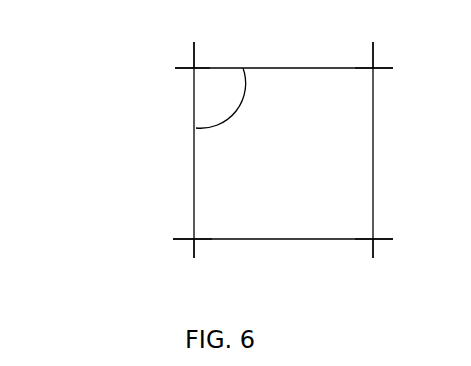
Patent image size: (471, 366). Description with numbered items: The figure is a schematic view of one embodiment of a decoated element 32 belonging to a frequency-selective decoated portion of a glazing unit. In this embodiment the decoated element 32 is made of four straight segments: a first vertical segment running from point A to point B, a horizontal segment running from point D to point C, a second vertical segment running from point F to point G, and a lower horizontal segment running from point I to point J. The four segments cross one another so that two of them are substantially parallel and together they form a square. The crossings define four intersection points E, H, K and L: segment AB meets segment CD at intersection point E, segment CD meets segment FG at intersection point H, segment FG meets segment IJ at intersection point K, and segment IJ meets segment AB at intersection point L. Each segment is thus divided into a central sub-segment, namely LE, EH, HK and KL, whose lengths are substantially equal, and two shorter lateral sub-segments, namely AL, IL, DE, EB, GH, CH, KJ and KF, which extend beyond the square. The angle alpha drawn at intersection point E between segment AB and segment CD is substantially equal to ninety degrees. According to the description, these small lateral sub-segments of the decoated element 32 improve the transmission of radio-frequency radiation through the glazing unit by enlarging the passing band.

The decoated element 32 is at (98, 42).
The angle alpha is at (225, 100).
The point A is at (194, 266).
The point B is at (193, 40).
The point C is at (398, 71).
The point D is at (168, 69).
The intersection point E is at (203, 57).
The point F is at (373, 266).
The point G is at (372, 35).
The intersection point H is at (360, 85).
The point I is at (175, 240).
The point J is at (395, 240).
The intersection point K is at (362, 228).
The intersection point L is at (205, 228).